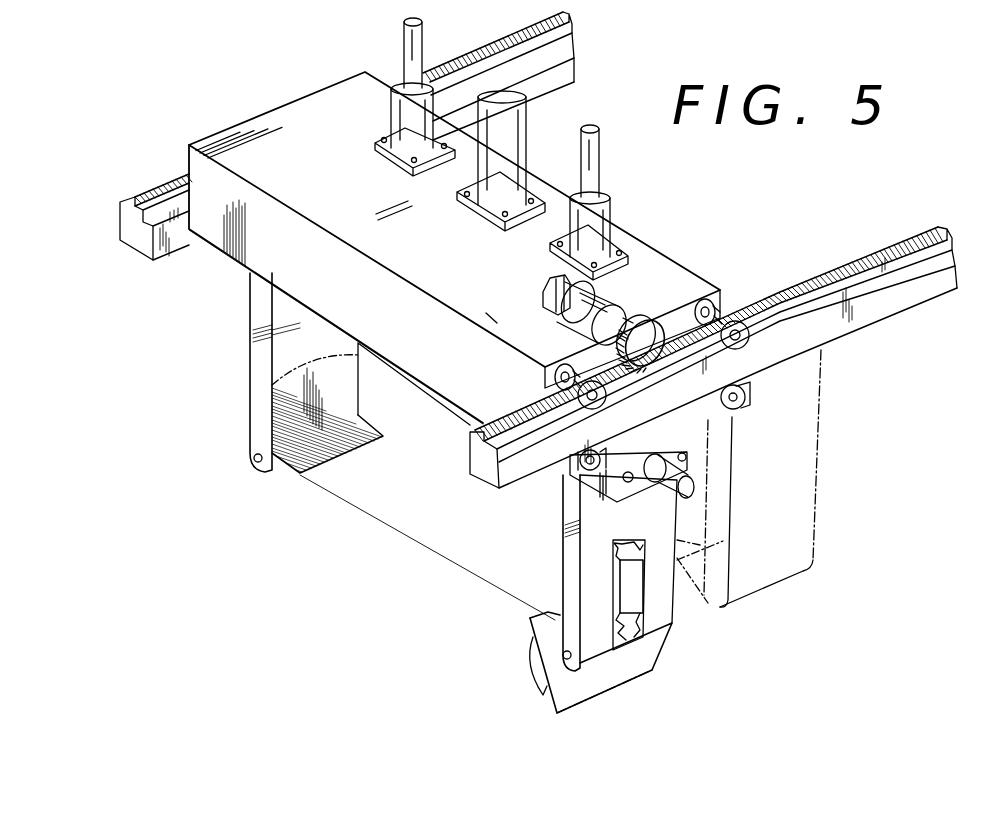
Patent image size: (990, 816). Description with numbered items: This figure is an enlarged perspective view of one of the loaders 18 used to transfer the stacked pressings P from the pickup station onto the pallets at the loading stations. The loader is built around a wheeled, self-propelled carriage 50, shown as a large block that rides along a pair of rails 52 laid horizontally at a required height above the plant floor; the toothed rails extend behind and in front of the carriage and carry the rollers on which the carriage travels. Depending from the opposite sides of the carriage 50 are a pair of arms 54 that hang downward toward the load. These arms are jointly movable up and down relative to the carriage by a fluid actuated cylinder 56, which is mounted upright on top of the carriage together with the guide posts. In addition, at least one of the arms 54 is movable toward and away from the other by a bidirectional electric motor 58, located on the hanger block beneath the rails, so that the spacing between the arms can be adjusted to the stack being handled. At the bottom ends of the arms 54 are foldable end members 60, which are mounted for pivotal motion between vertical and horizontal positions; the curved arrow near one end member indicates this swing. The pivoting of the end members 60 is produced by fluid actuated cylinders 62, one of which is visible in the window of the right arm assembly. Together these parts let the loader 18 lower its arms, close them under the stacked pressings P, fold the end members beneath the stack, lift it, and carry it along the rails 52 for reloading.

The loader 18 is at (255, 110).
The carriage 50 is at (224, 255).
The rails 52 is at (574, 70).
The arms 54 is at (252, 354).
The fluid actuated cylinder 56 is at (527, 147).
The bidirectional electric motor 58 is at (650, 492).
The foldable end members 60 is at (292, 474).
The fluid actuated cylinders 62 is at (643, 588).
The stacked pressings P is at (392, 545).